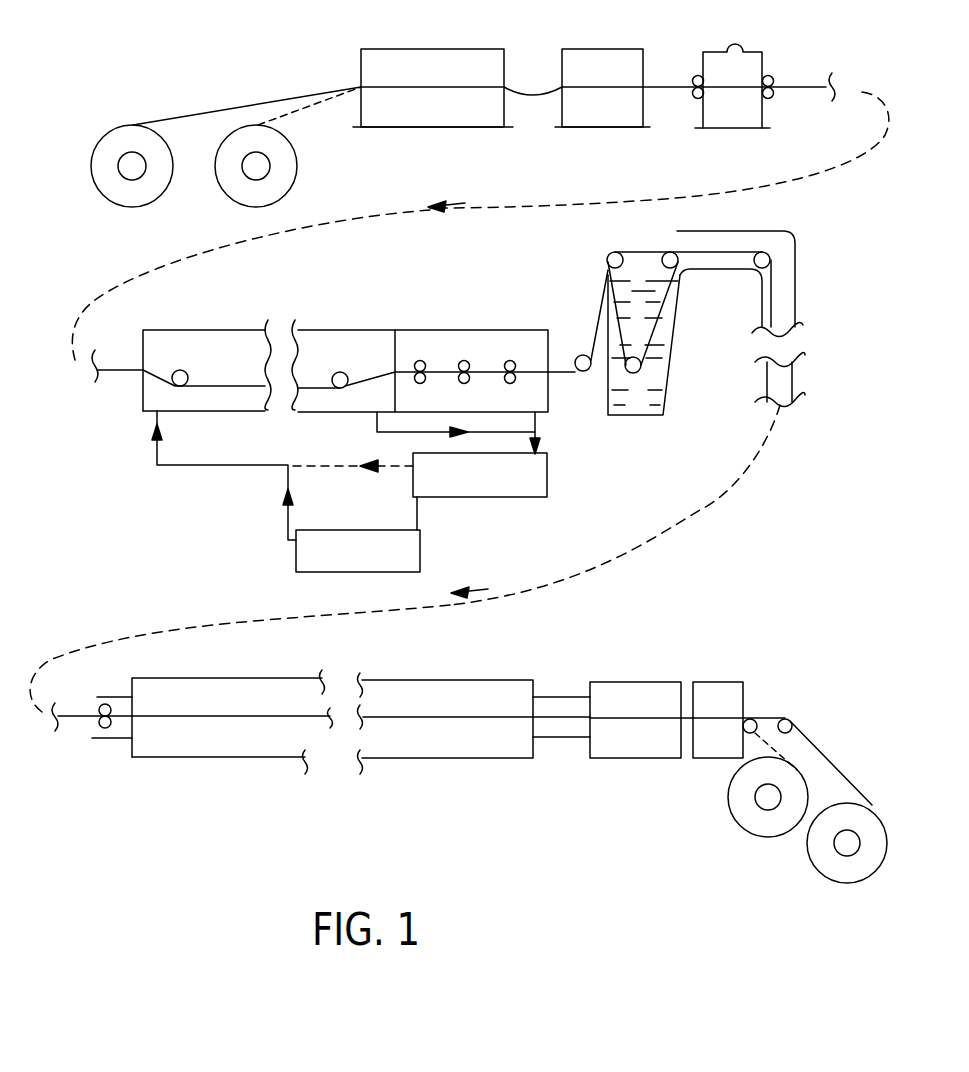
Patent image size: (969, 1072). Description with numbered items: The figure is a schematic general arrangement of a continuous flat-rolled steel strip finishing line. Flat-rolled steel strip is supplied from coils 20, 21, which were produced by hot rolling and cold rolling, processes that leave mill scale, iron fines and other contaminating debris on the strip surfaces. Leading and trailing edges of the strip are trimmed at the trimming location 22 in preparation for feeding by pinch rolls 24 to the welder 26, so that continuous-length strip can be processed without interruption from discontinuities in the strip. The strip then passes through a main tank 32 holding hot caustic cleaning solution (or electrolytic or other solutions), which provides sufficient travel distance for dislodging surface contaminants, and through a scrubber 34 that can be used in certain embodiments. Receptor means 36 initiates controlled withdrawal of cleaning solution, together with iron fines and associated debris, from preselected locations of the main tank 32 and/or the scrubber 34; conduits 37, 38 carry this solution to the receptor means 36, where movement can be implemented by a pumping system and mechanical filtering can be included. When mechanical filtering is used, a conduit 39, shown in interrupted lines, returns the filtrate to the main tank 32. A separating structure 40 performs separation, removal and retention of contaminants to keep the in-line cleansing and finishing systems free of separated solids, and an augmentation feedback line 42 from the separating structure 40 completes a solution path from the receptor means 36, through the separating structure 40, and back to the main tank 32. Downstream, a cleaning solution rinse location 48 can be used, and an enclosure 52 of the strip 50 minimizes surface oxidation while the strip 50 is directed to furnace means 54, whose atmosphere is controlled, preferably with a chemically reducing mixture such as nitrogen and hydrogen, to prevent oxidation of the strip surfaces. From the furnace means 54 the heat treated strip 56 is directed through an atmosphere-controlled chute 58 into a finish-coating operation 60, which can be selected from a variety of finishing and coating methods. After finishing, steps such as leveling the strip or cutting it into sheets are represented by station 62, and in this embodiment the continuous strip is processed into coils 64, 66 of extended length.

The coil 20 is at (112, 186).
The coil 21 is at (286, 186).
The edge trimming location 22 is at (480, 60).
The pinch rolls 24 is at (632, 60).
The welder 26 is at (757, 60).
The main tank 32 is at (269, 366).
The scrubber 34 is at (485, 371).
The receptor means 36 is at (480, 491).
The conduit 37 is at (390, 438).
The conduit 38 is at (537, 428).
The conduit 39 is at (345, 470).
The separating structure 40 is at (358, 551).
The augmentation feedback line 42 is at (287, 480).
The cleaning solution rinse location 48 is at (657, 418).
The strip 50 is at (700, 243).
The enclosure 52 is at (795, 296).
The furnace means 54 is at (213, 770).
The heat treated strip 56 is at (566, 718).
The atmosphere-controlled chute 58 is at (558, 738).
The finish-coating operation 60 is at (636, 681).
The station 62 is at (715, 681).
The coil 64 is at (740, 812).
The coil 66 is at (832, 866).